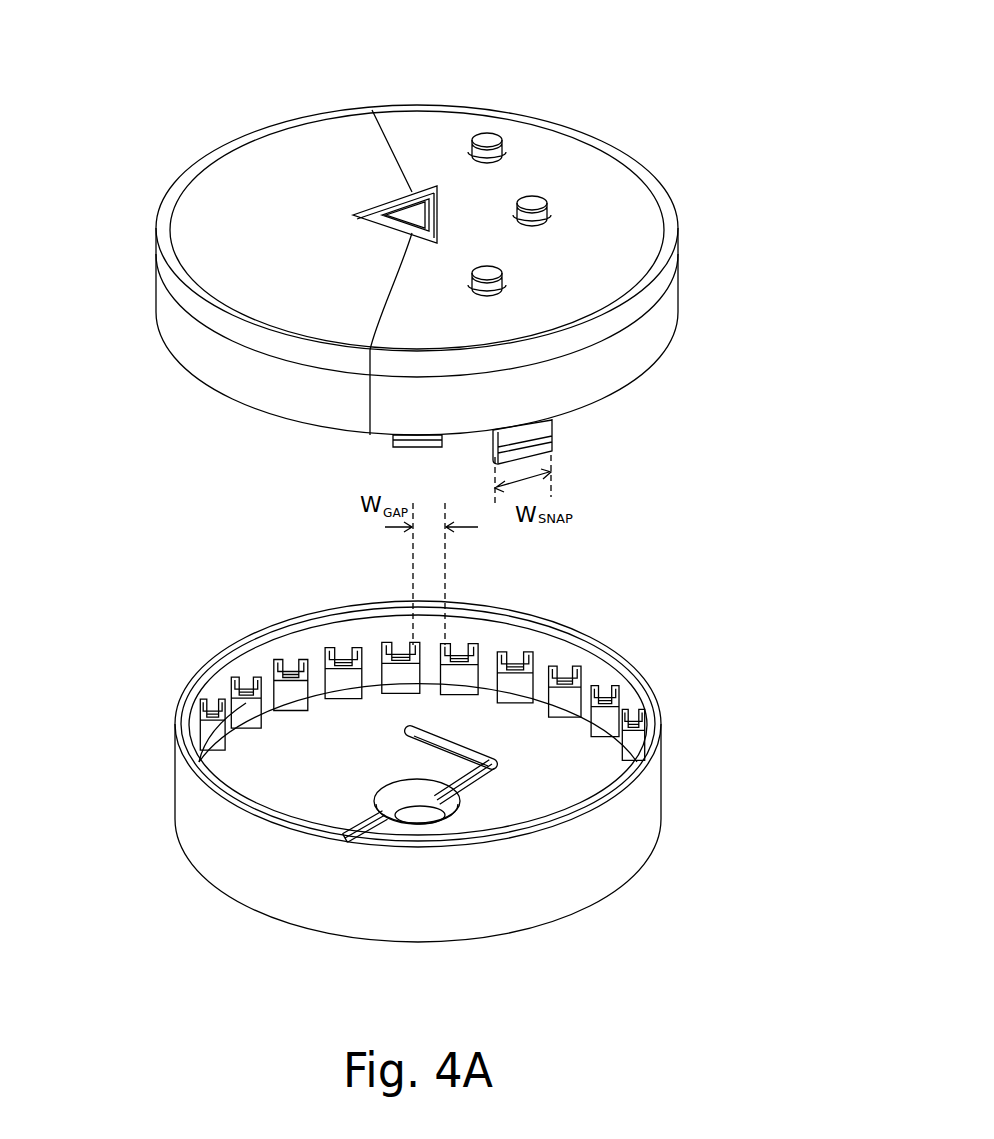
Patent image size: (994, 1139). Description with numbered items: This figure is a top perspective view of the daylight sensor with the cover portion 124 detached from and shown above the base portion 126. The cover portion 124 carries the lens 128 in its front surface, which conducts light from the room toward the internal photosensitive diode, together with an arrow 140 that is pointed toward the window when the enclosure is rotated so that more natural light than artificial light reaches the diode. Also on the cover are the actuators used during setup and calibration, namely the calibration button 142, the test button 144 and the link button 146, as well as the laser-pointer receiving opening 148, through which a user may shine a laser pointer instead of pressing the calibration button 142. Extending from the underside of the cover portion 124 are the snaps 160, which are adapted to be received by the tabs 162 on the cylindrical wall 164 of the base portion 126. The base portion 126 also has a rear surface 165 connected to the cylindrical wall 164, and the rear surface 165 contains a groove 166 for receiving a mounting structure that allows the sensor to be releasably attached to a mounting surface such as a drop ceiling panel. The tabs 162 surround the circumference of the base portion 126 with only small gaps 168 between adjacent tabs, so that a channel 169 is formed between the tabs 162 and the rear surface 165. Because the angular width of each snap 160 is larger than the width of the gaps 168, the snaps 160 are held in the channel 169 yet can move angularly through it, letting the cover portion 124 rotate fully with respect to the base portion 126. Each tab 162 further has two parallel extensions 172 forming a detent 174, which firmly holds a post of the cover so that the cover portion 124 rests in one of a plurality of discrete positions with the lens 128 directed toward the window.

The cover portion 124 is at (441, 117).
The base portion 126 is at (202, 813).
The lens 128 is at (273, 250).
The arrow 140 is at (380, 205).
The calibration button 142 is at (492, 137).
The test button 144 is at (536, 200).
The link button 146 is at (489, 278).
The laser-pointer receiving opening 148 is at (428, 215).
The snaps 160 is at (560, 421).
The tabs 162 is at (366, 690).
The cylindrical wall 164 is at (220, 688).
The rear surface 165 is at (326, 783).
The groove 166 is at (493, 773).
The gaps 168 is at (582, 697).
The channel 169 is at (508, 697).
The parallel extensions 172 is at (405, 655).
The detents 174 is at (517, 662).